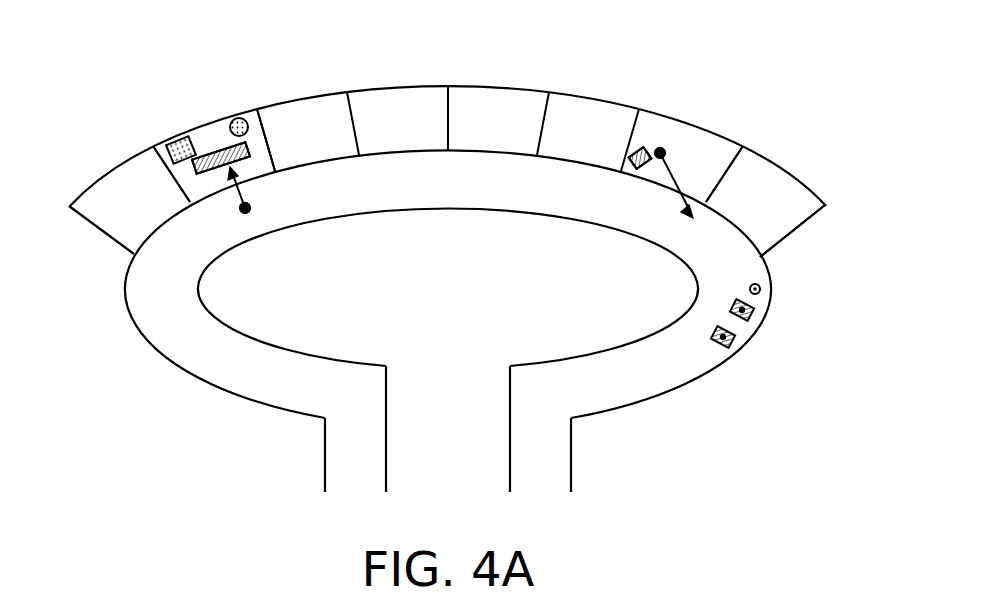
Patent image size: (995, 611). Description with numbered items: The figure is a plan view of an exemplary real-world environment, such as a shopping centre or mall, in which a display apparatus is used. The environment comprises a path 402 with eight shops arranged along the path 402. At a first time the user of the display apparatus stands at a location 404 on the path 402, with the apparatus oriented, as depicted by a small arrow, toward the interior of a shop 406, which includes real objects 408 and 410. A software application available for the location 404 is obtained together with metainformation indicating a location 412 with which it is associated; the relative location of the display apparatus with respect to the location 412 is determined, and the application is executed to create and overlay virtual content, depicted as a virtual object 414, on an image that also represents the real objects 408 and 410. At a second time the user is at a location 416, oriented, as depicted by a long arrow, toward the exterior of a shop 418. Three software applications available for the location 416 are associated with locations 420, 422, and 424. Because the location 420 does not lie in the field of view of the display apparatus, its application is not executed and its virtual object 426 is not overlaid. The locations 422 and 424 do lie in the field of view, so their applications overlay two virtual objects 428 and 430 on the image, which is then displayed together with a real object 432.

The path 402 is at (140, 290).
The location 404 is at (245, 208).
The shop 406 is at (257, 147).
The real object 408 is at (177, 137).
The real object 410 is at (238, 118).
The location 412 is at (222, 152).
The virtual object 414 is at (203, 157).
The location 416 is at (662, 148).
The shop 418 is at (732, 147).
The location 420 is at (637, 157).
The location 422 is at (750, 306).
The location 424 is at (725, 345).
The virtual object 426 is at (644, 153).
The virtual object 428 is at (746, 315).
The virtual object 430 is at (728, 340).
The real object 432 is at (764, 281).